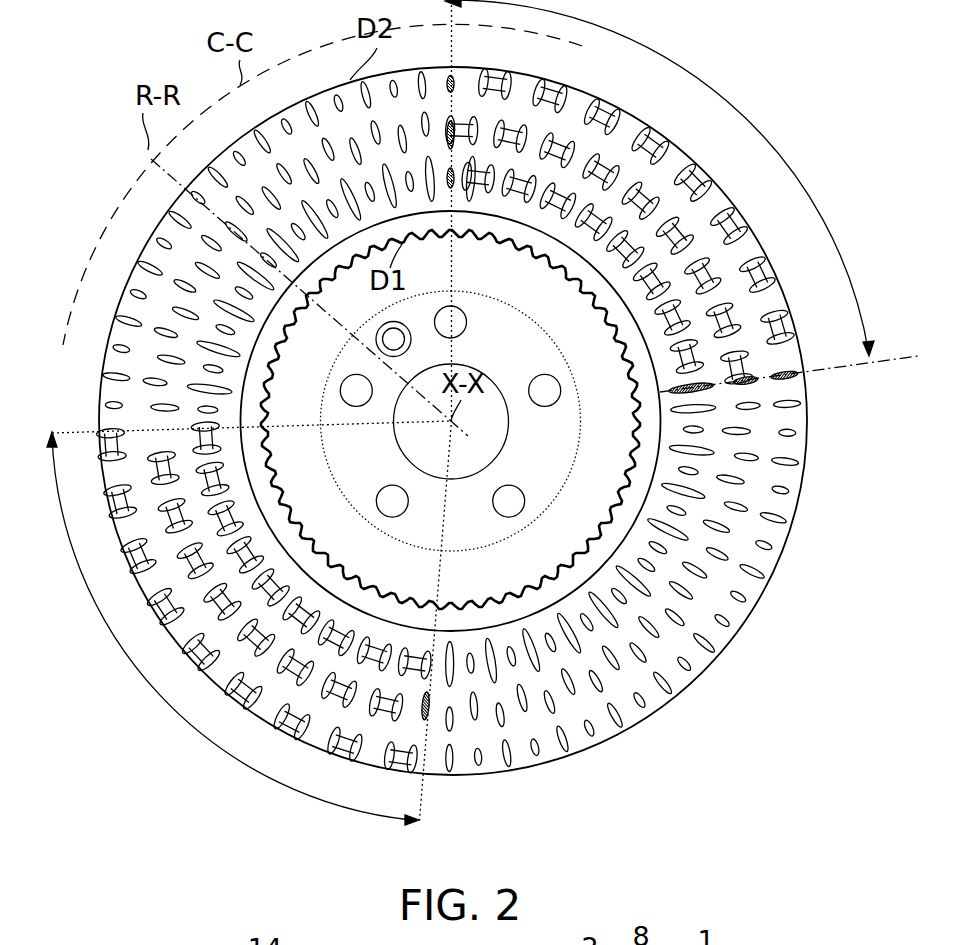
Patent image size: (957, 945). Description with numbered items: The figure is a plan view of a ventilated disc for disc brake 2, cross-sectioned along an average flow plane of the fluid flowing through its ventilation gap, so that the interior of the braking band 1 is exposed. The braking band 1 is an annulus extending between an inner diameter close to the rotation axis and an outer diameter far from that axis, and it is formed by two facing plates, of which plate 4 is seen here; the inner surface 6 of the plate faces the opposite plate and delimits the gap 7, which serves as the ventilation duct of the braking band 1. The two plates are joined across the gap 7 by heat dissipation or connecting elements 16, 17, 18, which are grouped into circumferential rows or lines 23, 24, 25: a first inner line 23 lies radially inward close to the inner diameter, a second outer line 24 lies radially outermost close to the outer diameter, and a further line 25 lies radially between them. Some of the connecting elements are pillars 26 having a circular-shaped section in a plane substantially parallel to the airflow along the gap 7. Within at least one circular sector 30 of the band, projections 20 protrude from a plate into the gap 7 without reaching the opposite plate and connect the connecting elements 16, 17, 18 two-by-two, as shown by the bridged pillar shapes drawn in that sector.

The braking band 1 is at (747, 583).
The disc for disc brake 2 is at (686, 134).
The plate 4 is at (690, 682).
The inner surface 6 is at (767, 470).
The gap 7 is at (766, 310).
The connecting element 16 is at (572, 100).
The connecting element 17 is at (538, 90).
The connecting element 18 is at (494, 160).
The projection 20 is at (657, 140).
The first line 23 is at (660, 448).
The second line 24 is at (790, 406).
The line 25 is at (706, 585).
The pillar 26 is at (800, 434).
The circular sector 30 is at (768, 133).